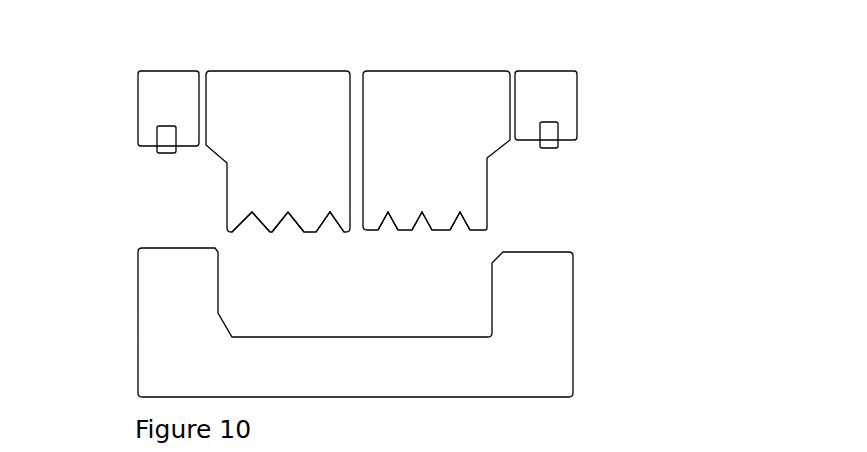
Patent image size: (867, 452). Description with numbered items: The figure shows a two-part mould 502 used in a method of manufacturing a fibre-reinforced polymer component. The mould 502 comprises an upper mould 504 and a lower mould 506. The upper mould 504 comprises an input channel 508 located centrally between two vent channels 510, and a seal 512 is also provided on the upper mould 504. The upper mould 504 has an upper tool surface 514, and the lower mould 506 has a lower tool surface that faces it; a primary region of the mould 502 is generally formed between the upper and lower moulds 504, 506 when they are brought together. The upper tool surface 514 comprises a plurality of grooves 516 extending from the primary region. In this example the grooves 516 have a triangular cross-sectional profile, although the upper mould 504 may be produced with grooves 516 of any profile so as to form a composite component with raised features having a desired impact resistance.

The two-part mould 502 is at (645, 187).
The upper mould 504 is at (475, 96).
The lower mould 506 is at (550, 354).
The input channel 508 is at (353, 103).
The vent channels 510 is at (198, 112).
The seal 512 is at (550, 133).
The upper tool surface 514 is at (270, 232).
The grooves 516 is at (460, 223).